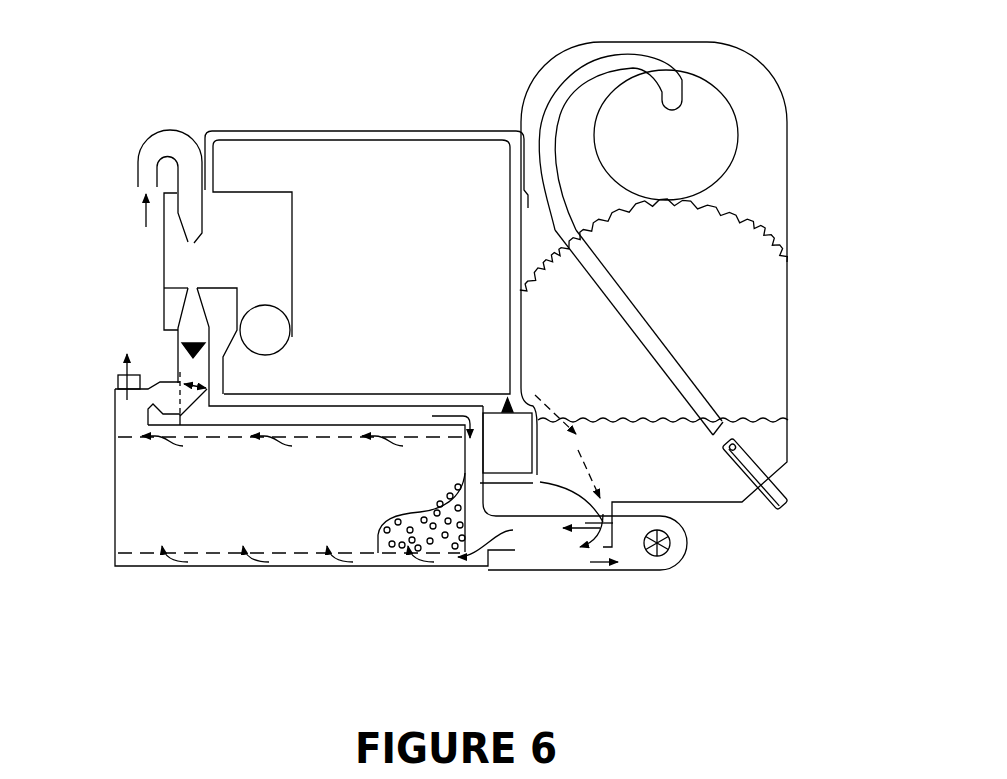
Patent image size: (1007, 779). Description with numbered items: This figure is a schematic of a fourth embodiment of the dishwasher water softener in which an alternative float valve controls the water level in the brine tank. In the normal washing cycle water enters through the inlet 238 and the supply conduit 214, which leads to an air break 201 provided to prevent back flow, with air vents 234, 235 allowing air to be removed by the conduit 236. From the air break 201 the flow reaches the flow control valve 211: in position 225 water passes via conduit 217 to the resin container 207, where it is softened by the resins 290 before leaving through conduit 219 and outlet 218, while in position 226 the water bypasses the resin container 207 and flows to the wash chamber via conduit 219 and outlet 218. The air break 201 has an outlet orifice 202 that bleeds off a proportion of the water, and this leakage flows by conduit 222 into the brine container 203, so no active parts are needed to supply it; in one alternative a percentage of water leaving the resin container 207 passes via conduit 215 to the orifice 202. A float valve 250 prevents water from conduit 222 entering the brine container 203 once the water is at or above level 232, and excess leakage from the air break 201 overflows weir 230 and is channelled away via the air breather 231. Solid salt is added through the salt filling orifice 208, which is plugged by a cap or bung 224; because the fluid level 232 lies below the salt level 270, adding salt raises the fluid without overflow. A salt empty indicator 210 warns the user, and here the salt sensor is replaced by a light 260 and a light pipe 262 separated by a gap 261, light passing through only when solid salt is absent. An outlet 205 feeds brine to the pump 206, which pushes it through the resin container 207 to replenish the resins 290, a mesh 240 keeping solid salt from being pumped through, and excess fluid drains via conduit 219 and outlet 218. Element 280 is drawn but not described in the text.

The air break 201 is at (185, 263).
The outlet orifice 202 is at (232, 307).
The brine container 203 is at (790, 312).
The outlet 205 is at (607, 567).
The pump 206 is at (668, 550).
The resin container 207 is at (155, 508).
The salt filling orifice 208 is at (730, 163).
The salt empty indicator 210 is at (672, 95).
The flow control valve 211 is at (170, 404).
The supply conduit 214 is at (158, 143).
The conduit 215 is at (187, 317).
The conduit 217 is at (362, 415).
The outlet 218 is at (120, 377).
The conduit 219 is at (118, 413).
The conduit 222 is at (322, 402).
The cap or bung 224 is at (695, 120).
The valve position 225 is at (208, 386).
The valve position 226 is at (222, 395).
The weir 230 is at (238, 285).
The air breather 231 is at (290, 322).
The fluid level 232 is at (790, 417).
The air vent 234 is at (518, 393).
The air vent 235 is at (523, 197).
The conduit 236 is at (277, 130).
The inlet 238 is at (146, 183).
The mesh 240 is at (595, 475).
The float valve 250 is at (505, 463).
The light 260 is at (745, 448).
The gap 261 is at (728, 433).
The light pipe 262 is at (660, 352).
The salt level 270 is at (752, 220).
The valve 280 is at (183, 345).
The resins 290 is at (428, 537).